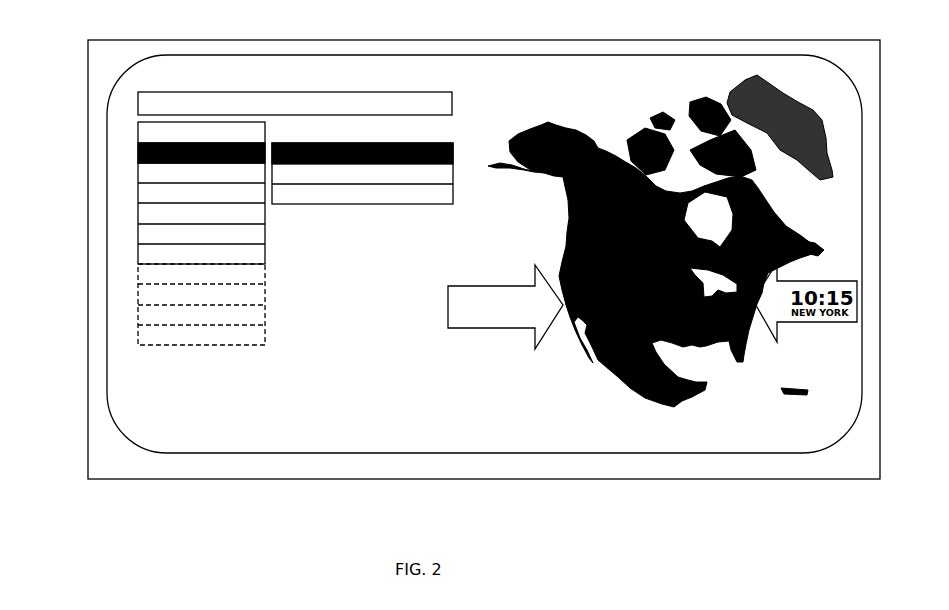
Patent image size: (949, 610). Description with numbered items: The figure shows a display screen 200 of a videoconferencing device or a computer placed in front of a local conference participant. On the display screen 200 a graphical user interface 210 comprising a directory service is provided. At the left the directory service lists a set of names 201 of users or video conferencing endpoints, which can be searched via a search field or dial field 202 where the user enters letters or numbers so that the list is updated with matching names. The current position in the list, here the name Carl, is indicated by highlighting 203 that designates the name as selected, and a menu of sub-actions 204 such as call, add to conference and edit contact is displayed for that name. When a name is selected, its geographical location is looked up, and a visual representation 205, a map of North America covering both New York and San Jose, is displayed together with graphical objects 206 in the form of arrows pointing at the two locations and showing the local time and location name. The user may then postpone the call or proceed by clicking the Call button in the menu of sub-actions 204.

The display screen 200 is at (322, 483).
The graphical user interface 210 is at (373, 454).
The set of names 201 is at (137, 232).
The search field / dial field 202 is at (137, 101).
The highlighting of selected name 203 is at (137, 149).
The menu of sub-actions 204 is at (331, 142).
The visual representation 205 is at (596, 147).
The graphical objects 206 is at (440, 335).